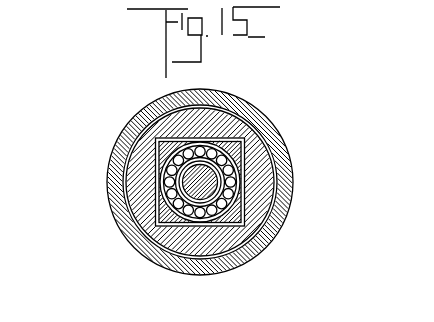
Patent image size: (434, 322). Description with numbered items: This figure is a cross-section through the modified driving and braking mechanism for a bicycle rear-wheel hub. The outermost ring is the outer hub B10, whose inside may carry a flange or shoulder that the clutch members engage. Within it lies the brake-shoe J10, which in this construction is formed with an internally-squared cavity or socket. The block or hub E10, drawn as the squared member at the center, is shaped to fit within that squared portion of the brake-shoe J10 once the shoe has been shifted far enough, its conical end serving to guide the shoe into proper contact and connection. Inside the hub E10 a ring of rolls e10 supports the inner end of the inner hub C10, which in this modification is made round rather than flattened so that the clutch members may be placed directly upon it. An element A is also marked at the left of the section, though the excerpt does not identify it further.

The bearing assembly A is at (203, 201).
The outer hub B10 is at (230, 98).
The hub E10 is at (253, 132).
The brake-shoe J10 is at (258, 157).
The rolls e10 is at (237, 183).
The inner hub C10 is at (199, 227).